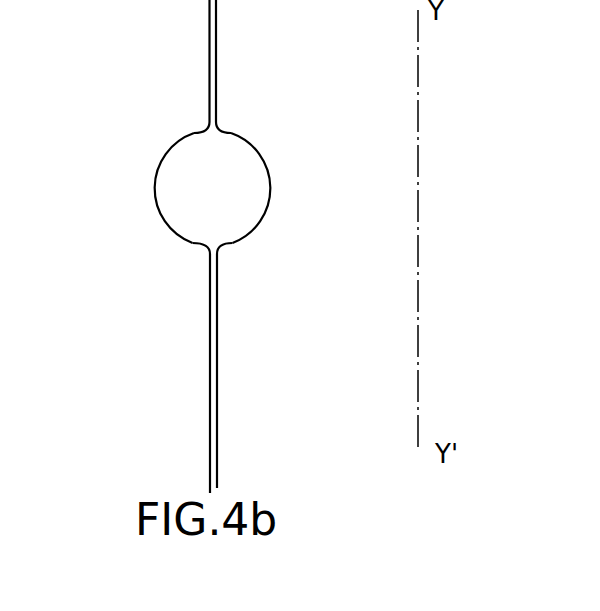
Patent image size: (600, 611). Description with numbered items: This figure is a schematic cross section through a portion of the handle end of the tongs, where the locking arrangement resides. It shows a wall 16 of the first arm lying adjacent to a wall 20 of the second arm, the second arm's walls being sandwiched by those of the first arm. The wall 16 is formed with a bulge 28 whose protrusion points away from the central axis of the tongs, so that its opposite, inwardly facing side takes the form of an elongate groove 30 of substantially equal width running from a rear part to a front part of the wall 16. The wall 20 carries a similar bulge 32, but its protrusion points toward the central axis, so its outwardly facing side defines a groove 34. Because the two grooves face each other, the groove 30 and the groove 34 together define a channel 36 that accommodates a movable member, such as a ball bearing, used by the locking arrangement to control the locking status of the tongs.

The wall 16 is at (208, 61).
The wall 20 is at (217, 72).
The bulge 28 is at (170, 232).
The groove 30 is at (165, 177).
The bulge 32 is at (255, 230).
The groove 34 is at (260, 189).
The channel 36 is at (215, 300).